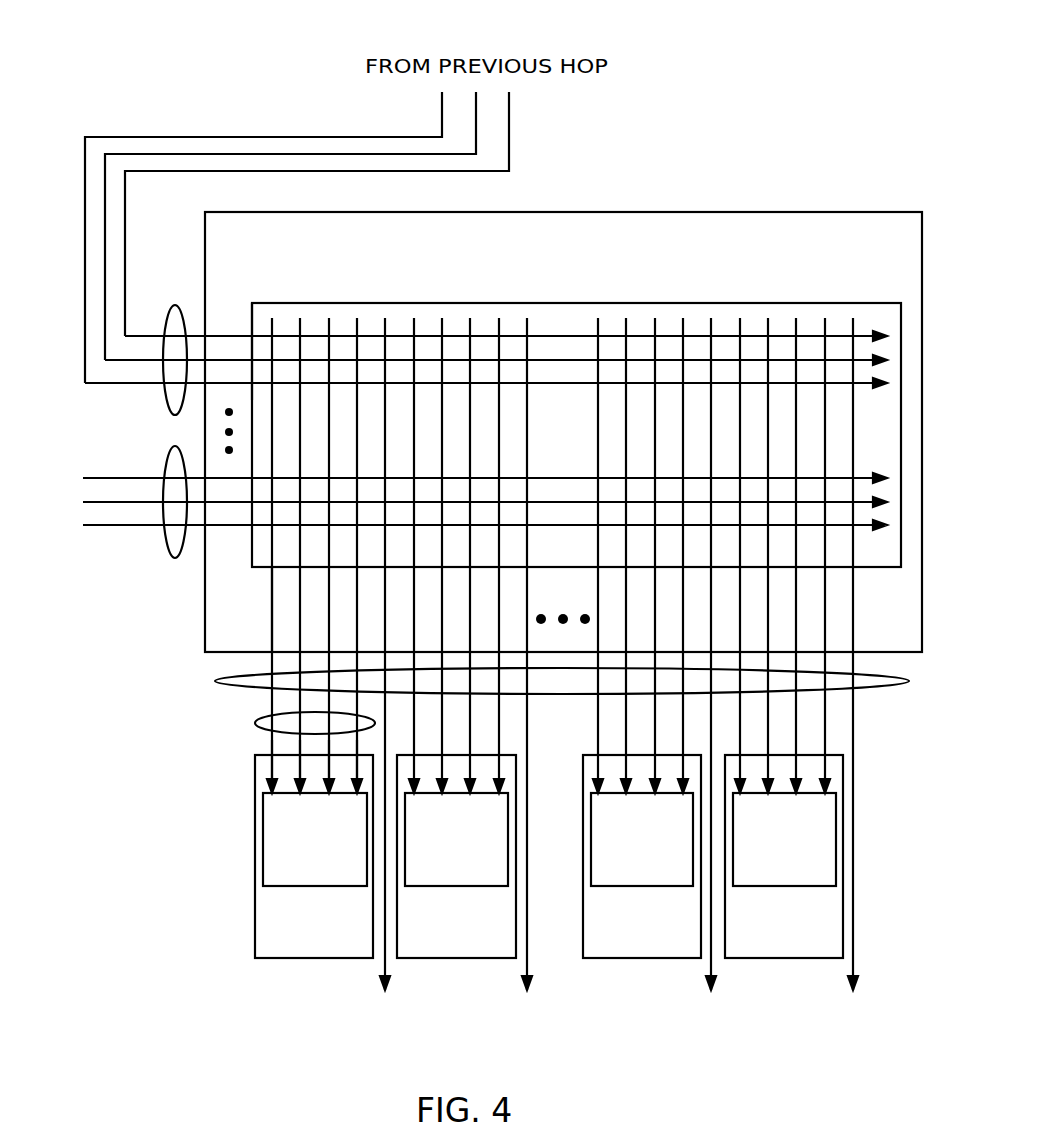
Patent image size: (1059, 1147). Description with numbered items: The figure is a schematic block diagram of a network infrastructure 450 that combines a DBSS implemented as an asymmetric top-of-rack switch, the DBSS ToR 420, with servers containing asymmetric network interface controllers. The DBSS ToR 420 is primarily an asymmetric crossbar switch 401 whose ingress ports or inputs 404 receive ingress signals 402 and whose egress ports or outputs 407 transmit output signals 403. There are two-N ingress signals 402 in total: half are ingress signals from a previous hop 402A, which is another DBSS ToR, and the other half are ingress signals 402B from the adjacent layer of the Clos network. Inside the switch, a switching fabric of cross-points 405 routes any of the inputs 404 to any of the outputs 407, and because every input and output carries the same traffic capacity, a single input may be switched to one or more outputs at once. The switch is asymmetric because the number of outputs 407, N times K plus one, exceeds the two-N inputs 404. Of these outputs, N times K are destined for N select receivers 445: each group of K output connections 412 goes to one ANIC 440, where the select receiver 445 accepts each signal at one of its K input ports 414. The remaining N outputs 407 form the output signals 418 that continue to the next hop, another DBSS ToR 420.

The network infrastructure 450 is at (114, 54).
The DBSS ToR 420 is at (657, 276).
The asymmetric crossbar switch 401 is at (320, 302).
The inputs 404 is at (250, 336).
The ingress signals 402 is at (71, 312).
The ingress signals from previous hop 402A is at (172, 306).
The ingress signals from adjacent Clos layer 402B is at (172, 546).
The cross-points 405 is at (414, 332).
The outputs 407 is at (272, 568).
The output signals 403 is at (215, 682).
The output connections 412 is at (255, 723).
The input ports 414 is at (263, 791).
The asymmetric network interface controller (ANIC) 440 is at (549, 856).
The select receiver (Select RX NIC) 445 is at (549, 839).
The output signals for next hop 418 is at (857, 997).